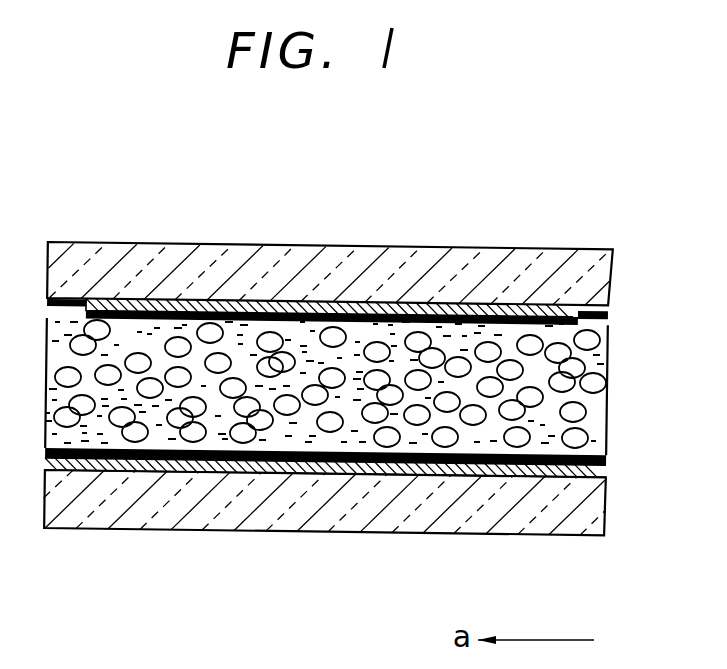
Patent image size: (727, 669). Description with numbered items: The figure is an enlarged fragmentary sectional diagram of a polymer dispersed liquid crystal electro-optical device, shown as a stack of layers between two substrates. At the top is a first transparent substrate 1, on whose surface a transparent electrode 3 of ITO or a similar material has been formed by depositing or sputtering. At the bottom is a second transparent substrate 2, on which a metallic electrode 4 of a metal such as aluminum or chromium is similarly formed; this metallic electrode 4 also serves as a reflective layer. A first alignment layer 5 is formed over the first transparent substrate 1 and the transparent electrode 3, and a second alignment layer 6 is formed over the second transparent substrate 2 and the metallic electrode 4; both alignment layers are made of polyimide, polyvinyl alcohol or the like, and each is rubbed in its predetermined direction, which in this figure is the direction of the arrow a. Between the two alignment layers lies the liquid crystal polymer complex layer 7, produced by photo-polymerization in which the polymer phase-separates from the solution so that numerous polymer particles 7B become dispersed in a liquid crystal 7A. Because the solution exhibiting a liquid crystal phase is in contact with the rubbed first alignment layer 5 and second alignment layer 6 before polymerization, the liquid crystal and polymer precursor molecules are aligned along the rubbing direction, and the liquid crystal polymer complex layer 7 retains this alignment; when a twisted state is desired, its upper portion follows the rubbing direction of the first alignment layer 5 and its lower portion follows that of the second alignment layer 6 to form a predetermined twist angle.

The first transparent substrate 1 is at (138, 256).
The second transparent substrate 2 is at (160, 513).
The transparent electrode 3 is at (386, 302).
The metallic electrode 4 is at (459, 472).
The first alignment layer 5 is at (462, 318).
The second alignment layer 6 is at (530, 462).
The liquid crystal polymer complex layer 7 is at (350, 385).
The liquid crystal 7A is at (237, 333).
The polymer particles 7B is at (330, 430).